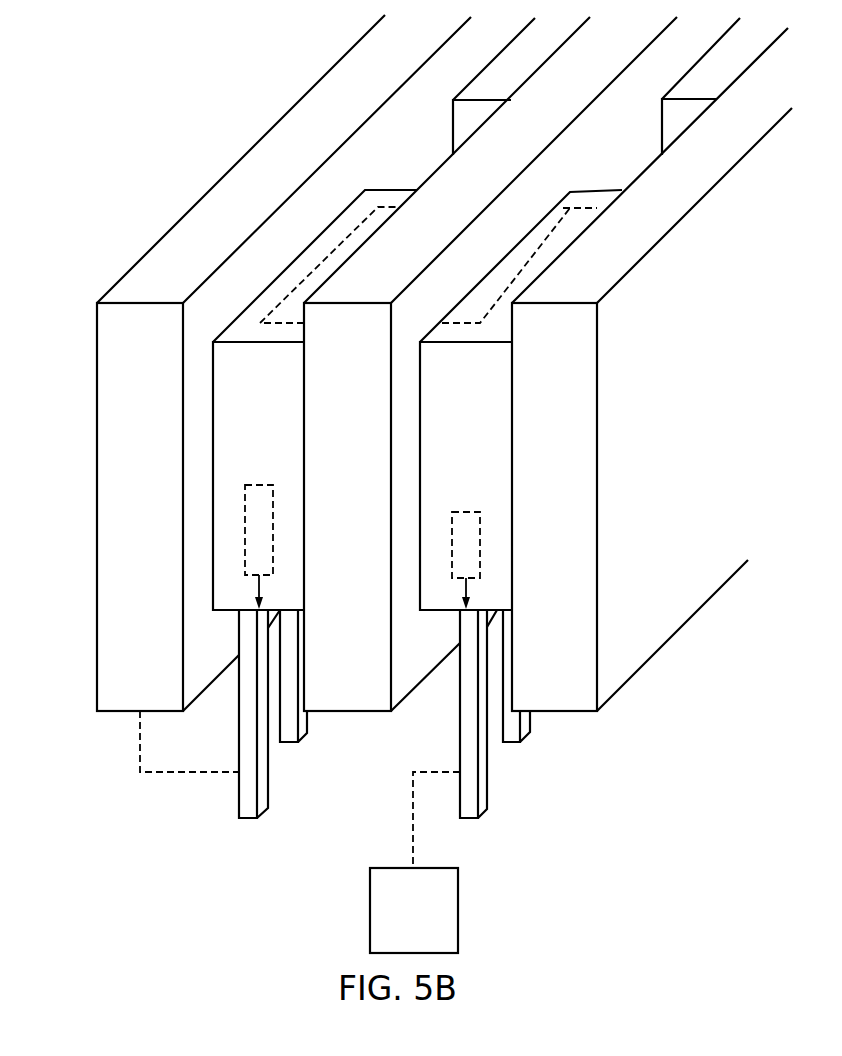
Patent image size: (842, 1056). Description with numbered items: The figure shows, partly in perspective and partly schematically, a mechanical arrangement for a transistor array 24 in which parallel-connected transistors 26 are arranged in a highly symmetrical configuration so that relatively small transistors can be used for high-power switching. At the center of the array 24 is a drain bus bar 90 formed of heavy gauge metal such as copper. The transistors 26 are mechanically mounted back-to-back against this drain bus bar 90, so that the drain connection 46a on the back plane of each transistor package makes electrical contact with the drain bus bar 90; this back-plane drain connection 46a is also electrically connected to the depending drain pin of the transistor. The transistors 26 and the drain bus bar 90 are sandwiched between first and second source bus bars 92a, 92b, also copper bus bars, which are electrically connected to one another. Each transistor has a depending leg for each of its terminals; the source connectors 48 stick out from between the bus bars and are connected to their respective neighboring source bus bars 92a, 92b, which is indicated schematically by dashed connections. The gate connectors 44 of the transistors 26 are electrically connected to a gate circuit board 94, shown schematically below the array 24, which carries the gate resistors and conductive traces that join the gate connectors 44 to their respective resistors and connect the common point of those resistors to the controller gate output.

The array 24 is at (206, 160).
The transistor 26 is at (230, 361).
The drain connection 46a is at (378, 212).
The source connector 48 is at (262, 788).
The gate connector 44 is at (481, 787).
The drain bus bar 90 is at (352, 712).
The first source bus bar 92a is at (627, 682).
The second source bus bar 92b is at (97, 382).
The gate circuit board 94 is at (390, 868).